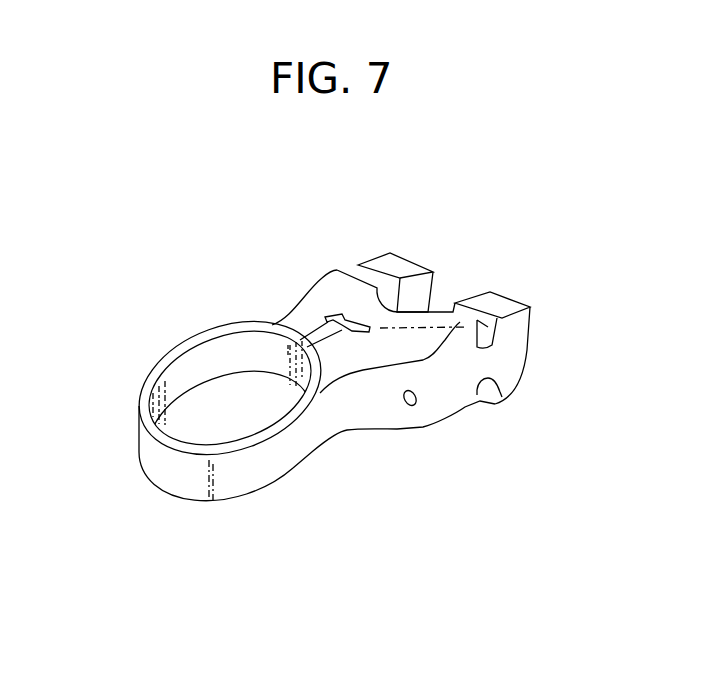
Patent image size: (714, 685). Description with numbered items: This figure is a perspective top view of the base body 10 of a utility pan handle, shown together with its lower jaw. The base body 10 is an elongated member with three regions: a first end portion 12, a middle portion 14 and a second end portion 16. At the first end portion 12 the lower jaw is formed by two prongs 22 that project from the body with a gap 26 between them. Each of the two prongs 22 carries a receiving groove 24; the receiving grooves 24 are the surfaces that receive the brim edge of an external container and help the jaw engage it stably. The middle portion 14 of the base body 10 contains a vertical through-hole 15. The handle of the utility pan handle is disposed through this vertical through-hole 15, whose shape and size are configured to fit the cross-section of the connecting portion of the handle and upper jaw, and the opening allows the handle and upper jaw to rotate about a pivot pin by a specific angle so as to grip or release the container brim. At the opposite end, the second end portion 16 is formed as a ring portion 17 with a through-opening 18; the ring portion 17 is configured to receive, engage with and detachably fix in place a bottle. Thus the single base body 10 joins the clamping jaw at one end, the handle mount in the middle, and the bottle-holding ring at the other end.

The base body 10 is at (250, 280).
The first end portion 12 is at (445, 340).
The middle portion 14 is at (335, 362).
The vertical through-hole 15 is at (342, 316).
The second end portion 16 is at (188, 480).
The ring portion 17 is at (153, 380).
The through-opening 18 is at (227, 393).
The prongs 22 is at (402, 272).
The receiving grooves 24 is at (366, 273).
The gap 26 is at (437, 306).